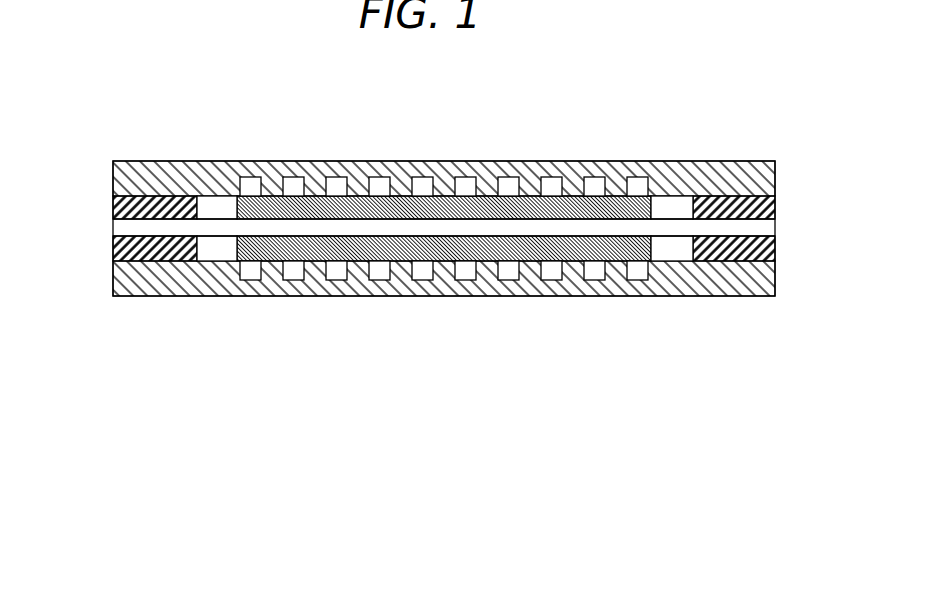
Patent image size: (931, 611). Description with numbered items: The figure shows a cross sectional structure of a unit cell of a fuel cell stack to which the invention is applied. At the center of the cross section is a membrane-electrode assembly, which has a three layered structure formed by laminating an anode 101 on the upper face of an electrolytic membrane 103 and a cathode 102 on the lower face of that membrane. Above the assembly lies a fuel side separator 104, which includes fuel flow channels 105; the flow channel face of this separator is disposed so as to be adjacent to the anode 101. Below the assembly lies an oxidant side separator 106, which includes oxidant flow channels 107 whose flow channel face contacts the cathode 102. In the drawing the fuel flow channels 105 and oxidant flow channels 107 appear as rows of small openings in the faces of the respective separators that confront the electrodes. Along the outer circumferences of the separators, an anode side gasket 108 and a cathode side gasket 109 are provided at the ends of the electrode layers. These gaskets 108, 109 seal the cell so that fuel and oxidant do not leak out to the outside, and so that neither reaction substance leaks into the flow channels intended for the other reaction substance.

The anode 101 is at (395, 208).
The cathode 102 is at (410, 250).
The electrolytic membrane 103 is at (234, 229).
The fuel side separator 104 is at (671, 163).
The fuel flow channel 105 is at (506, 190).
The oxidant side separator 106 is at (676, 296).
The oxidant flow channel 107 is at (508, 270).
The anode side gasket 108 is at (113, 205).
The cathode side gasket 109 is at (113, 250).